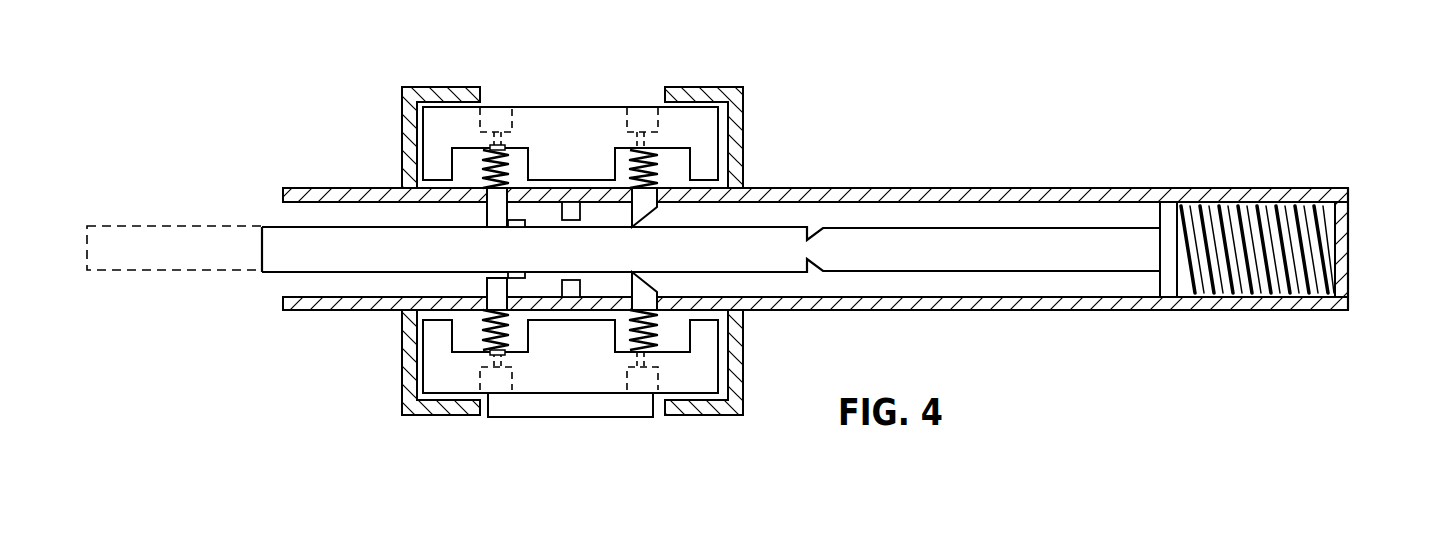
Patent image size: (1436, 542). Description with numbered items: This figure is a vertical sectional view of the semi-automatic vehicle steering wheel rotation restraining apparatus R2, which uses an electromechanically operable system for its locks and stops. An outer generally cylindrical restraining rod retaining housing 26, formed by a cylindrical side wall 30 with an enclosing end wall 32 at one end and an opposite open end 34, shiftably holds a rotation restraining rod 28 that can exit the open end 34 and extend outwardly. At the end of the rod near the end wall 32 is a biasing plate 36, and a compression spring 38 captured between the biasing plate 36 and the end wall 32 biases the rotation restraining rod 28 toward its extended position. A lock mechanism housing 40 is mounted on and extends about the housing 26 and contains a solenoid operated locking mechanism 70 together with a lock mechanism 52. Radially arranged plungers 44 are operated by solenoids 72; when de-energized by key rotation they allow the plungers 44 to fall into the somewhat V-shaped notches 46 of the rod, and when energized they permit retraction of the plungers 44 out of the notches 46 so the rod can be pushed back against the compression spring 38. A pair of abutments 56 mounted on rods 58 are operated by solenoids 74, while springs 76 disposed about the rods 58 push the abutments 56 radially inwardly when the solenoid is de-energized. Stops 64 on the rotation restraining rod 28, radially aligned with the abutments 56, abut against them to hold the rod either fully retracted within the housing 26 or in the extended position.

The restraining rod retaining housing 26 is at (894, 170).
The rotation restraining rod 28 is at (276, 226).
The side wall 30 is at (1046, 187).
The end wall 32 is at (1349, 236).
The open end 34 is at (282, 283).
The biasing plate 36 is at (1166, 210).
The compression spring 38 is at (1286, 210).
The lock mechanism housing 40 is at (744, 108).
The spring-biased plungers 44 is at (652, 210).
The notches 46 is at (811, 265).
The lock mechanism 52 is at (590, 408).
The abutments 56 is at (493, 217).
The rods 58 is at (508, 175).
The stops 64 is at (517, 222).
The solenoid operated locking mechanism 70 is at (563, 107).
The solenoids 72 is at (628, 122).
The solenoids 74 is at (510, 122).
The springs 76 is at (490, 148).
The semi-automatic vehicle steering wheel rotation restraining apparatus R2 is at (744, 70).